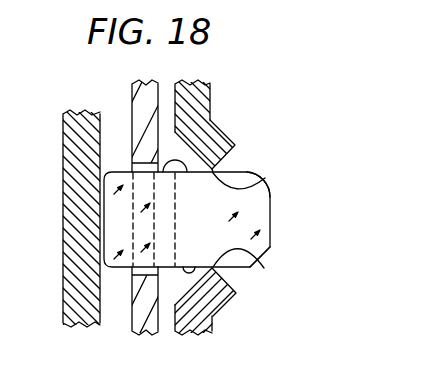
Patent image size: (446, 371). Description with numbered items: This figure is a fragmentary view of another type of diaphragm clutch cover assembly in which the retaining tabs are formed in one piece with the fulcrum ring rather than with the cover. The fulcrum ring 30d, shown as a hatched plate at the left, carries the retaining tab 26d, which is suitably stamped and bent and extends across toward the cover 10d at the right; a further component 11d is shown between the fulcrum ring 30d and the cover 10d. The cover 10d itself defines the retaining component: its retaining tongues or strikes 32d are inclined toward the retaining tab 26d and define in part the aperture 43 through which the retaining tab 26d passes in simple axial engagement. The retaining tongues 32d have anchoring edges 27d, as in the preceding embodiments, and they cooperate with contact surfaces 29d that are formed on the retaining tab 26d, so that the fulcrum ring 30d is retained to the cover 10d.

The cover 10d is at (215, 102).
The second plate member 11d is at (126, 125).
The fulcrum ring 30d is at (58, 160).
The retaining tongues 32d is at (233, 139).
The retaining tabs 26d is at (207, 228).
The contact surfaces 29d is at (221, 220).
The anchoring edges 27d is at (271, 203).
The aperture 43 is at (221, 181).